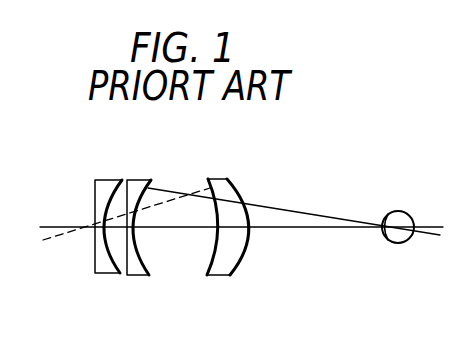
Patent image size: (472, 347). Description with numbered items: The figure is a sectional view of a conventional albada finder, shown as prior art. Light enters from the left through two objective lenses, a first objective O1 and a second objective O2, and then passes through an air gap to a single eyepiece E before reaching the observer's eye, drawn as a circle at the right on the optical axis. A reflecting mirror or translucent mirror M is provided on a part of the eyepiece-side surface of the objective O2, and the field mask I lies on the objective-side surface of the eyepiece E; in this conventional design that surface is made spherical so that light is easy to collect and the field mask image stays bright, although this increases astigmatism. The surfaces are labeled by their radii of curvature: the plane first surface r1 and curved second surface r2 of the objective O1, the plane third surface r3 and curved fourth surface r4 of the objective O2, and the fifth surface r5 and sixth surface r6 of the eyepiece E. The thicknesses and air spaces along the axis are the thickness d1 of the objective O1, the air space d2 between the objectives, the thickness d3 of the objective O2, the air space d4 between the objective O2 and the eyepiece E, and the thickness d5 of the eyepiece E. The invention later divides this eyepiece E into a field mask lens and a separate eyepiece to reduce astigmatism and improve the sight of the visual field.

The objective O1 is at (112, 178).
The objective O2 is at (139, 178).
The field mask I is at (208, 188).
The eyepiece E is at (223, 178).
The reflecting mirror or translucent mirror M is at (150, 266).
The thickness d1 is at (101, 225).
The air space d2 is at (112, 236).
The thickness d3 is at (134, 238).
The air space d4 is at (158, 228).
The thickness d5 is at (232, 228).
The radius of curvature r1 is at (93, 268).
The radius of curvature r2 is at (107, 277).
The radius of curvature r3 is at (135, 278).
The radius of curvature r4 is at (145, 276).
The radius of curvature r5 is at (217, 280).
The radius of curvature r6 is at (237, 275).